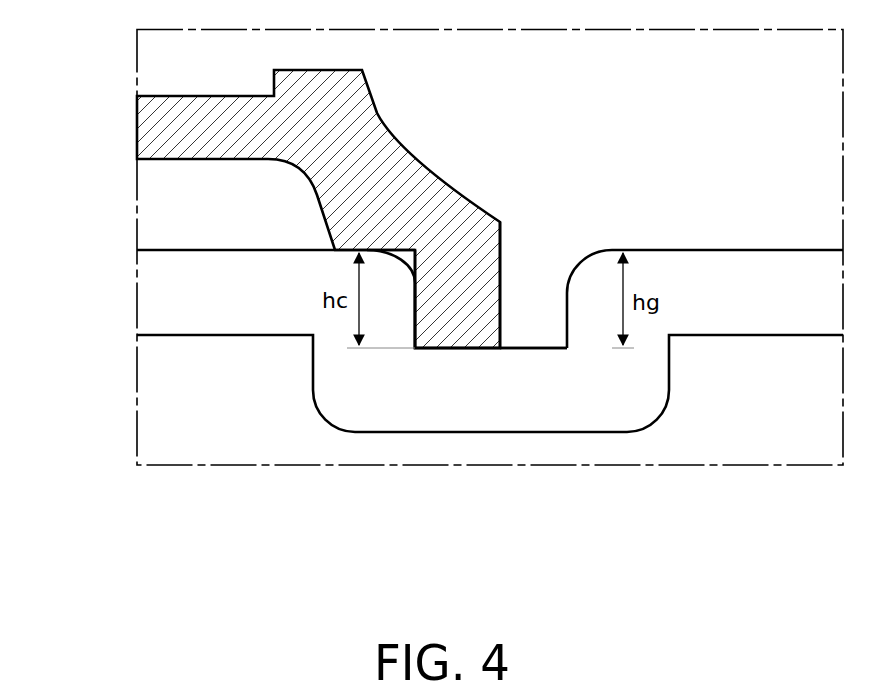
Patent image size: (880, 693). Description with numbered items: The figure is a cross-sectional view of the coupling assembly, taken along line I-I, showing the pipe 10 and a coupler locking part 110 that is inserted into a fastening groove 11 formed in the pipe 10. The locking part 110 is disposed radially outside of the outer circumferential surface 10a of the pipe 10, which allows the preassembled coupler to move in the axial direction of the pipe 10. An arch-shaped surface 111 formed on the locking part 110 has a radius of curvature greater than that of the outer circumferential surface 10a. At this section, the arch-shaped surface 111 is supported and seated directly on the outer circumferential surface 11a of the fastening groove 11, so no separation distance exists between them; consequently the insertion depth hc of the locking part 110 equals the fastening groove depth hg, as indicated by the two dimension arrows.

The pipe 10 is at (160, 300).
The outer circumferential surface 10a is at (178, 250).
The fastening groove 11 is at (536, 316).
The outer circumferential surface of the fastening groove 11a is at (518, 346).
The locking part 110 is at (393, 163).
The arch-shaped surface 111 is at (458, 349).